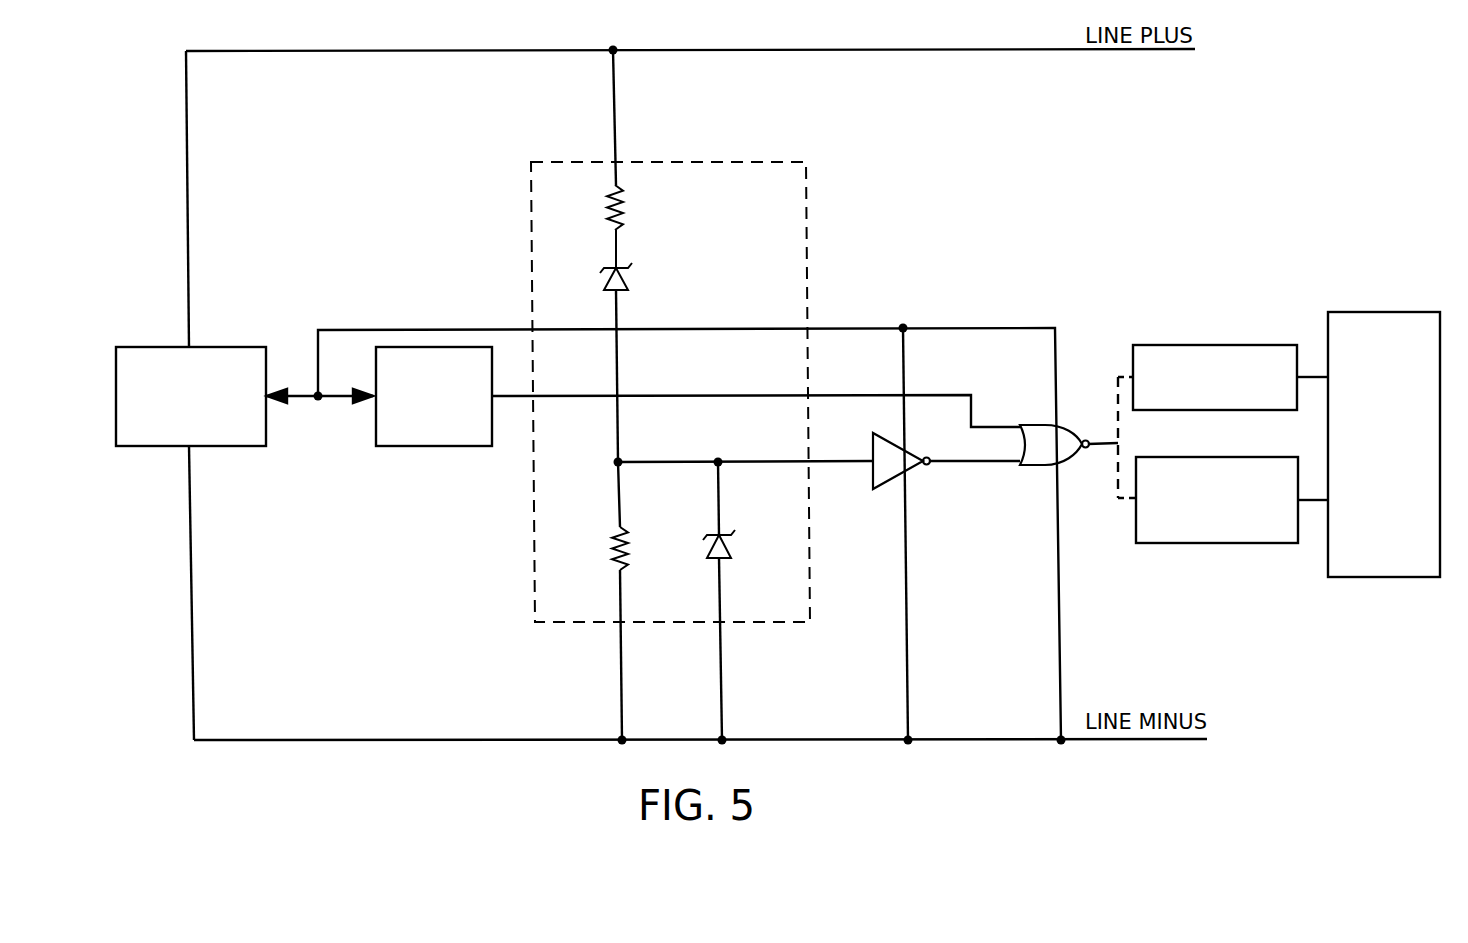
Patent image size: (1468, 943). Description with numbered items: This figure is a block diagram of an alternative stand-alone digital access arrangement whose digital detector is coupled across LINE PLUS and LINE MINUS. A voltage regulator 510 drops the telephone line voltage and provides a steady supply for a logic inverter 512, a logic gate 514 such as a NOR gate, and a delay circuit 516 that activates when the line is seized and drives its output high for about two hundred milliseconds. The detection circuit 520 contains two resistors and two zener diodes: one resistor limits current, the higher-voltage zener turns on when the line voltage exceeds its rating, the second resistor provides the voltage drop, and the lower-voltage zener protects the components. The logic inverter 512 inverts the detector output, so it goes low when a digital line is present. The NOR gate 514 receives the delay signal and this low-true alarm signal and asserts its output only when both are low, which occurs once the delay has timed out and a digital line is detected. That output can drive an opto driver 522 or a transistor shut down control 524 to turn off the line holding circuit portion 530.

The voltage regulator 510 is at (220, 355).
The logic inverter 512 is at (890, 468).
The logic gate 514 is at (1050, 430).
The delay circuit 516 is at (400, 430).
The detection circuit 520 is at (790, 176).
The opto driver 522 is at (1148, 352).
The transistor shut down control 524 is at (1153, 533).
The line holding circuit portion 530 is at (1348, 558).